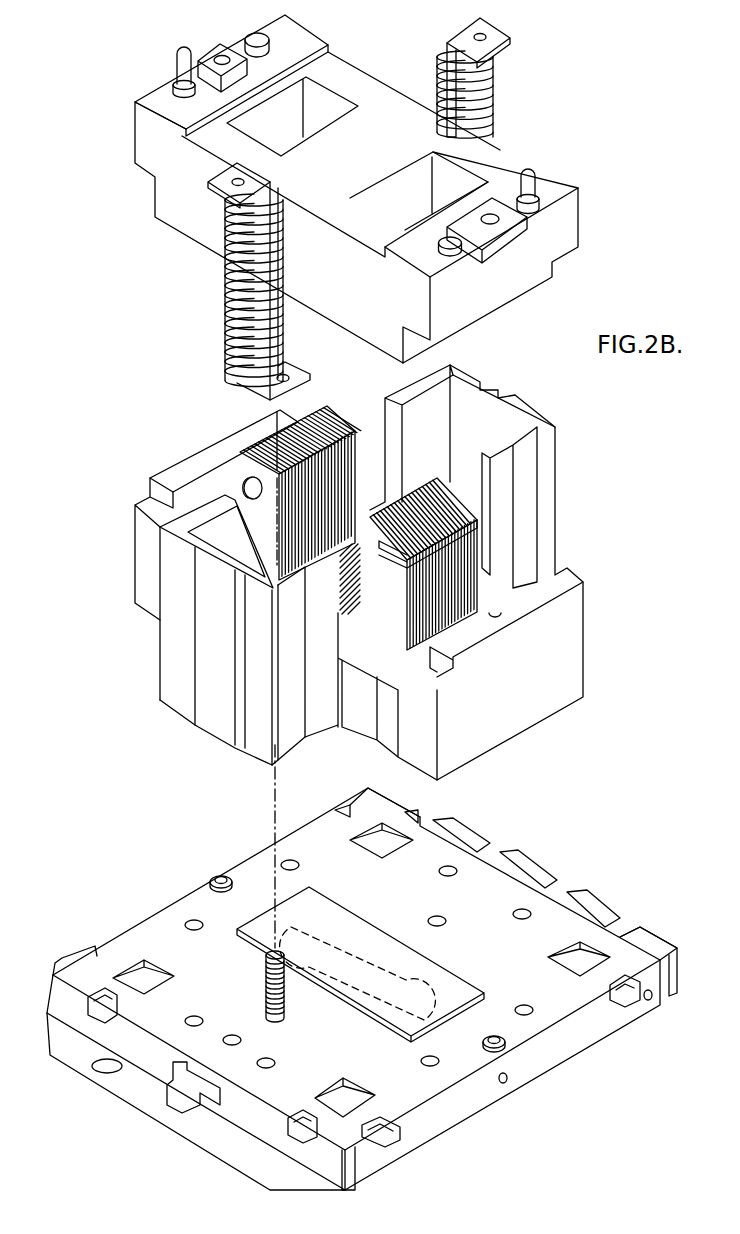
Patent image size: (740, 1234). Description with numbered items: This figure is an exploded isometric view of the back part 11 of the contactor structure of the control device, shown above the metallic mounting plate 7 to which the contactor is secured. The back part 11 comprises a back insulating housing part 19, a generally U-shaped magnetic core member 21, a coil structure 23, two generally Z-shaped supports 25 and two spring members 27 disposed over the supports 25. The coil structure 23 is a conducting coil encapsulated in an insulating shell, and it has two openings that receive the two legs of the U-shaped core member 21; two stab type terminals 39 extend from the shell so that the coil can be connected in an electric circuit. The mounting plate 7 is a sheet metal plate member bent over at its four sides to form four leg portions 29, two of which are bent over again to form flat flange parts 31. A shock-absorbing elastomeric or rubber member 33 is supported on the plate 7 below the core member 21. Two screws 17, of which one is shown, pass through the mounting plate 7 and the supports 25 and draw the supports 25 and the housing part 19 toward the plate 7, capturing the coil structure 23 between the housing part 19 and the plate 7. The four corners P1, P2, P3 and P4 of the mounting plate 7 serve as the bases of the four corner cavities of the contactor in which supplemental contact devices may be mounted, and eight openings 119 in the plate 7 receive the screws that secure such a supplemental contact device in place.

The mounting plate 7 is at (487, 950).
The back part 11 is at (604, 488).
The screw 17 is at (264, 985).
The back insulating housing part 19 is at (135, 580).
The magnetic core member 21 is at (342, 456).
The coil structure 23 is at (178, 216).
The support 25 is at (214, 192).
The spring member 27 is at (228, 332).
The leg portion 29 is at (47, 993).
The flat flange part 31 is at (230, 1148).
The shock-absorbing elastomeric member 33 is at (338, 903).
The stab type terminal 39 is at (176, 69).
The opening 119 is at (526, 1004).
The corner P1 is at (385, 1140).
The corner P2 is at (95, 950).
The corner P3 is at (640, 957).
The corner P4 is at (405, 807).